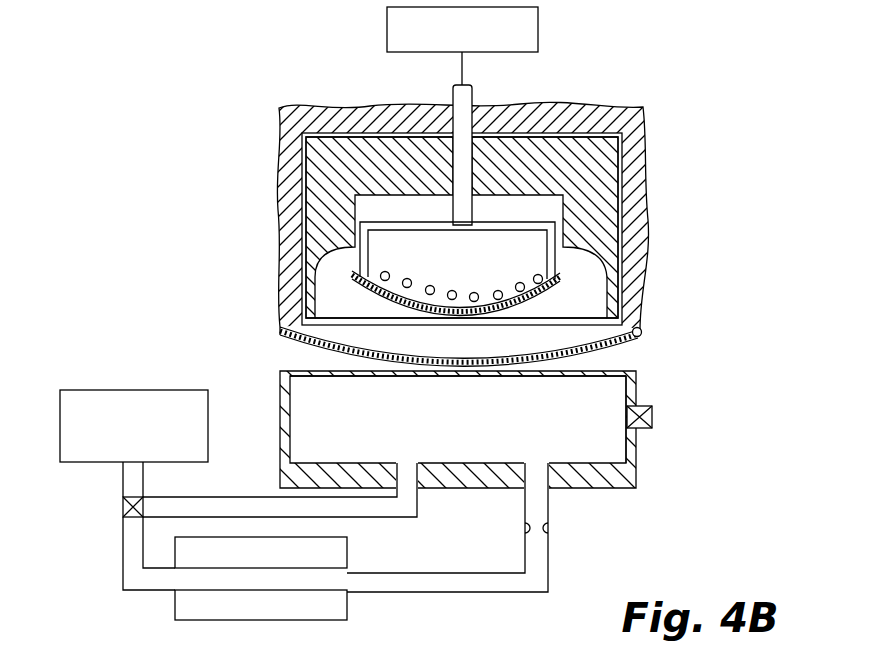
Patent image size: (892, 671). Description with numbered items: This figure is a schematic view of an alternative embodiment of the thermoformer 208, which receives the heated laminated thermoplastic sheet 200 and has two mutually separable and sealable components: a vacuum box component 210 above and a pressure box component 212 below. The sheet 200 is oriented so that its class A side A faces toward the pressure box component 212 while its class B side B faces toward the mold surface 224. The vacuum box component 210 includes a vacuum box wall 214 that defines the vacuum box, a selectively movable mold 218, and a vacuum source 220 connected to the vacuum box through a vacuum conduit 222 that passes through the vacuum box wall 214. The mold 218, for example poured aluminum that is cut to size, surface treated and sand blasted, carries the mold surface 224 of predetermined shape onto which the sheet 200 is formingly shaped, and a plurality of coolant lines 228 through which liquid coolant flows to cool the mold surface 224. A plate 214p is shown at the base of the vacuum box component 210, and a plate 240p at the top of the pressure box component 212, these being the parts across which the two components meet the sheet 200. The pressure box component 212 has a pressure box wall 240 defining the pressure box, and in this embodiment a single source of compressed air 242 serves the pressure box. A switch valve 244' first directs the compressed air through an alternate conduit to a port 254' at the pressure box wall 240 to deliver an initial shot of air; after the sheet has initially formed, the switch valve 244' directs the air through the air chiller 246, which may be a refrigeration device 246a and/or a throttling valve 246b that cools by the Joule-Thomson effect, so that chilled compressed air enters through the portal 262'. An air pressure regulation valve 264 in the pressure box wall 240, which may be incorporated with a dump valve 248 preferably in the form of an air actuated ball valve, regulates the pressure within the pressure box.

The heated laminated thermoplastic sheet 200 is at (473, 371).
The thermoformer 208 is at (684, 213).
The vacuum box component 210 is at (649, 159).
The pressure box component 212 is at (643, 455).
The vacuum box wall 214 is at (637, 253).
The pivotable plate 214p is at (640, 339).
The mold 218 is at (346, 273).
The vacuum source 220 is at (387, 25).
The vacuum conduit 222 is at (453, 92).
The mold surface 224 is at (458, 316).
The coolant lines 228 is at (537, 275).
The pressure box wall 240 is at (637, 388).
The lower housing top plate 240p is at (633, 372).
The source of compressed air 242 is at (103, 390).
The switch valve 244' is at (84, 522).
The air chiller 246 is at (356, 633).
The refrigeration device 246a is at (175, 592).
The throttling valve 246b is at (525, 530).
The dump valve 248 is at (653, 417).
The port 254' is at (280, 474).
The portal 262' is at (498, 454).
The air pressure regulation valve 264 is at (626, 418).
The class A side A is at (313, 342).
The class B side B is at (360, 357).